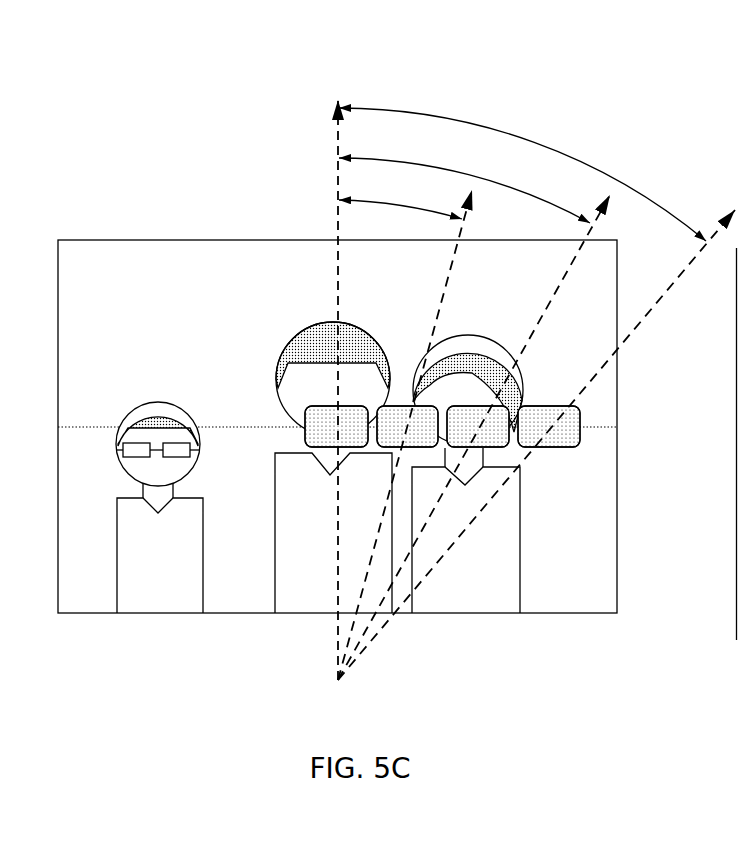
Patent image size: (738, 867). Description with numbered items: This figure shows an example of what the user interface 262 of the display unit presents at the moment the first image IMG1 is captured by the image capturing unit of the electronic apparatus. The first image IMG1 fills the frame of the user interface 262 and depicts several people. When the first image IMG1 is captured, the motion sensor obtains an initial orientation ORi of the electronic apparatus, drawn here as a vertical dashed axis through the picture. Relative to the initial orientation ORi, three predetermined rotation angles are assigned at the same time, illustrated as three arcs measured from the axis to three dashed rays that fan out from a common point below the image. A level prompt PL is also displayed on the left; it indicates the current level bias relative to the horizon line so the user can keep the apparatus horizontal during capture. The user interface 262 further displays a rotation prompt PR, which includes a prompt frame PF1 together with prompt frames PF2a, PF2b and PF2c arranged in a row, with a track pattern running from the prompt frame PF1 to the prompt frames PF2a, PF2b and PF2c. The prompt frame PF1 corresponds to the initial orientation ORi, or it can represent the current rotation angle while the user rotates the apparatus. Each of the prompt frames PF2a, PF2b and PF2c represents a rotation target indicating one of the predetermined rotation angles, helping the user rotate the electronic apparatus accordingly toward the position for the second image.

The user interface 262 is at (202, 238).
The first image IMG1 is at (169, 283).
The level prompt PL is at (84, 427).
The rotation prompt PR is at (401, 449).
The prompt frame PF1 is at (336, 426).
The prompt frame PF2a is at (407, 426).
The prompt frame PF2b is at (478, 426).
The prompt frame PF2c is at (549, 426).
The initial orientation ORi is at (329, 365).